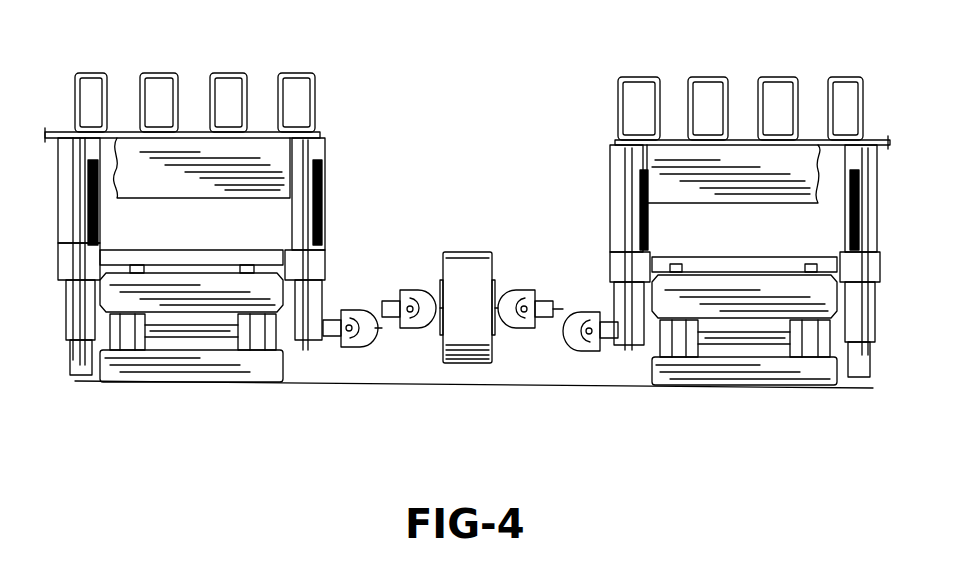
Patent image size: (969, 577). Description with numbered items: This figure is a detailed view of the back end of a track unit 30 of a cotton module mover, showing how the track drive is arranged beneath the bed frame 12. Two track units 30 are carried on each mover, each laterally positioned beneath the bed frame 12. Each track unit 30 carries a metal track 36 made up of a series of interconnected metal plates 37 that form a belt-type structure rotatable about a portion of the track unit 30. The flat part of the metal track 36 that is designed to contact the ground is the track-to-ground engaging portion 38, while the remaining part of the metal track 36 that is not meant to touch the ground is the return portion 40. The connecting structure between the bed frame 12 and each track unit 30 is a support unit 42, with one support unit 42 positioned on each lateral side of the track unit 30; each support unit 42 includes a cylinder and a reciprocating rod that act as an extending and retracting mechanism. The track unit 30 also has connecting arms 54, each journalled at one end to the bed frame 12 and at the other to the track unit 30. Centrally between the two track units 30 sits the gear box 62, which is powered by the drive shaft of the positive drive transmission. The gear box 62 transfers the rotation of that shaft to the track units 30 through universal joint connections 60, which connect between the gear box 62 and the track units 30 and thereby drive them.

The bed frame 12 is at (740, 140).
The track unit 30 is at (463, 327).
The metal track 36 is at (285, 342).
The metal plates 37 is at (148, 285).
The track-to-ground engaging portion 38 is at (200, 382).
The return portion 40 is at (250, 252).
The support unit 42 is at (100, 198).
The connecting arm 54 is at (73, 235).
The universal joint connection 60 is at (544, 354).
The gear box 62 is at (492, 210).